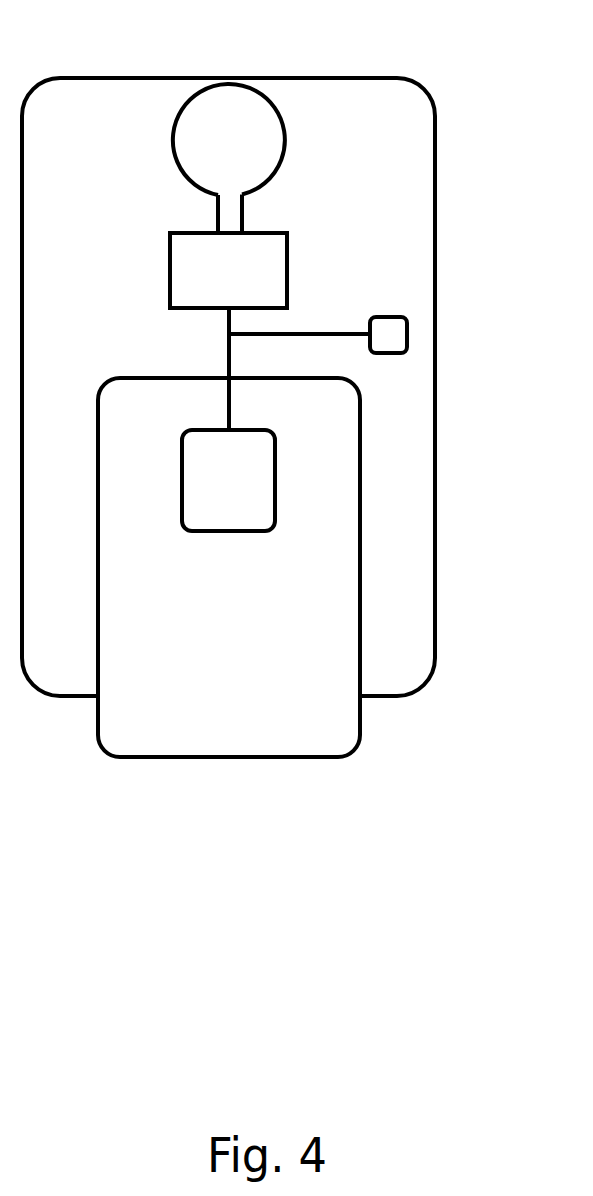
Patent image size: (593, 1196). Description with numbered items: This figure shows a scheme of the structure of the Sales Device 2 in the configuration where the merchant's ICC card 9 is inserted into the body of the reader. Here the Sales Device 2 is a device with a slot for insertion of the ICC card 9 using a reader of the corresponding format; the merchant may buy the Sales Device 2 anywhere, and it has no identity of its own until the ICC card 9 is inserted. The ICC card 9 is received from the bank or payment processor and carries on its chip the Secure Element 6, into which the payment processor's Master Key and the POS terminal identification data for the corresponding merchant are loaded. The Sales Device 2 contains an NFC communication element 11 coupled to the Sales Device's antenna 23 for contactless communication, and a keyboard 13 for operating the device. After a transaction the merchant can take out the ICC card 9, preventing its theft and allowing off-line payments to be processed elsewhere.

The Sales Device 2 is at (428, 97).
The Sales Device's antenna 23 is at (287, 157).
The NFC communication element 11 is at (283, 263).
The keyboard 13 is at (388, 334).
The ICC card 9 is at (327, 430).
The Secure Element 6 is at (275, 505).